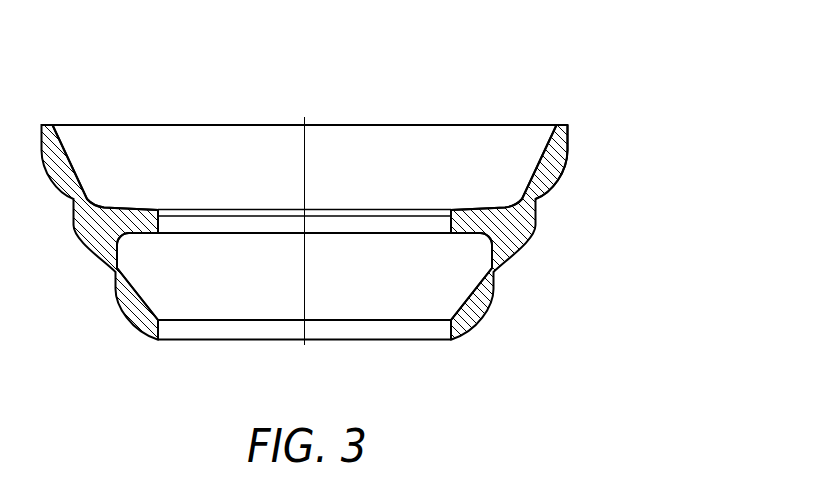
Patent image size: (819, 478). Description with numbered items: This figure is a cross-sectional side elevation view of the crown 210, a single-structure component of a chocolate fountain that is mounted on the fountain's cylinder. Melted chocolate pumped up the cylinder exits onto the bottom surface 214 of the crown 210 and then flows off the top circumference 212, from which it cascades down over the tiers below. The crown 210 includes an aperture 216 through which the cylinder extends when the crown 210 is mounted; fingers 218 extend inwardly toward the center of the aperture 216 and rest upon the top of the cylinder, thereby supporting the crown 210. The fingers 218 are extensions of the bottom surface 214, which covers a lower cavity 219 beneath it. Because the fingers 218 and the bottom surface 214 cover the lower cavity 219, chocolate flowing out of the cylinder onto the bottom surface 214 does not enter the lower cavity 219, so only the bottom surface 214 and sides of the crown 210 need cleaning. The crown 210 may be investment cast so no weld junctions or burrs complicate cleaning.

The crown 210 is at (406, 211).
The top circumference 212 is at (568, 124).
The bottom surface 214 is at (465, 200).
The aperture 216 is at (348, 195).
The fingers 218 is at (152, 209).
The lower cavity 219 is at (453, 257).